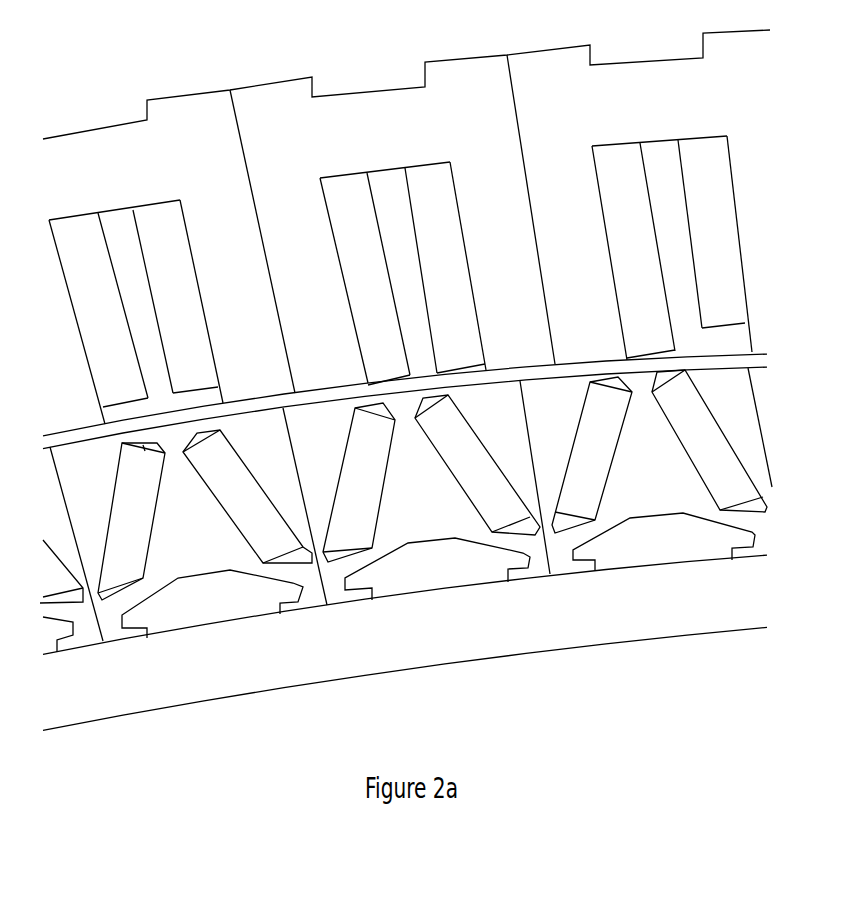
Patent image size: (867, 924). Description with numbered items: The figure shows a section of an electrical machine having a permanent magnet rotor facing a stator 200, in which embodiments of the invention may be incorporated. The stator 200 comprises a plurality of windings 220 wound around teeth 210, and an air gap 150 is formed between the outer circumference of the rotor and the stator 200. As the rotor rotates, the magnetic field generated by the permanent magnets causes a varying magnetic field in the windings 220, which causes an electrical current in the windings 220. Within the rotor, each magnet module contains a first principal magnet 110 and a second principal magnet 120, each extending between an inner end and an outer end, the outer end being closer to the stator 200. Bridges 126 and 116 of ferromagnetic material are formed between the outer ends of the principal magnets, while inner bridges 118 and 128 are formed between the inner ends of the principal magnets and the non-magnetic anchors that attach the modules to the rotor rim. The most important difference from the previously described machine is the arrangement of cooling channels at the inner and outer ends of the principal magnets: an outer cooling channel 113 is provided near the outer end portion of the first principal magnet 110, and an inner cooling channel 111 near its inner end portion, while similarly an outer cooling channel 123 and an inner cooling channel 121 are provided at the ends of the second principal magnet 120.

The stator 200 is at (155, 148).
The teeth 210 is at (293, 233).
The windings 220 is at (352, 217).
The air gap 150 is at (740, 349).
The first principal magnet 110 is at (495, 495).
The inner cooling channel 111 is at (293, 571).
The outer cooling channel 113 is at (197, 433).
The bridge 116 is at (147, 397).
The inner bridge 118 is at (307, 572).
The second principal magnet 120 is at (357, 498).
The inner cooling channel 121 is at (100, 598).
The outer cooling channel 123 is at (125, 450).
The bridge 126 is at (145, 450).
The inner bridge 128 is at (133, 595).